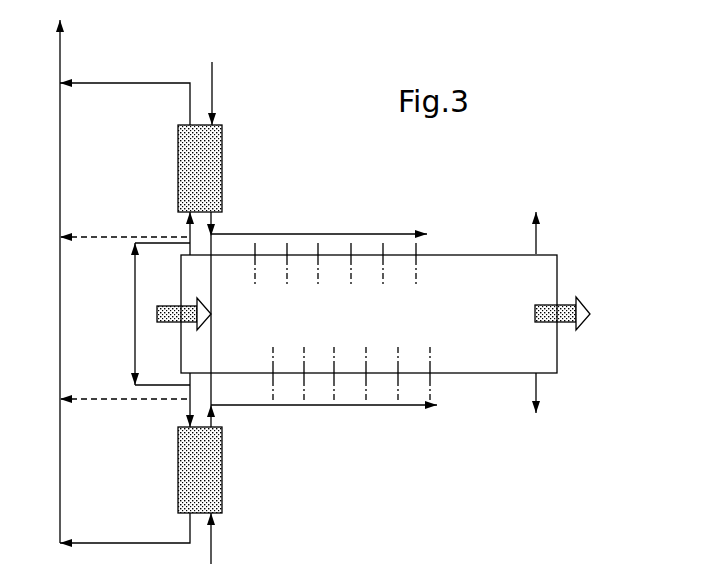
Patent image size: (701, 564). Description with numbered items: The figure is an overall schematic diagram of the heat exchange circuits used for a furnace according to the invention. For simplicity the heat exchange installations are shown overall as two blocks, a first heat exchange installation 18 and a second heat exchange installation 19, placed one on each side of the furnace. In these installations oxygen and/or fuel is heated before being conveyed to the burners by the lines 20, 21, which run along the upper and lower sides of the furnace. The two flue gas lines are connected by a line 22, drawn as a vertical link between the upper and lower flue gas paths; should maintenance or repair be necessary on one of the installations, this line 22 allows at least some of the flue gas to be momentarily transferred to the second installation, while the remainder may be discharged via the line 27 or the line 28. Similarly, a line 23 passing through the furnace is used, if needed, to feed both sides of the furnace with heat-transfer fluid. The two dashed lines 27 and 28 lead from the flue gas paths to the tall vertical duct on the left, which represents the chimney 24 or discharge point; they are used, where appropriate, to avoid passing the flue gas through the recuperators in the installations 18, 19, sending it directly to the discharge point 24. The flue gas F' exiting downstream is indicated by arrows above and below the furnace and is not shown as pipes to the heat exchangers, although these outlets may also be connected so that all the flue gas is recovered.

The heat exchange installation 18 is at (212, 192).
The heat exchange installation 19 is at (212, 458).
The line 20 is at (298, 228).
The line 21 is at (297, 406).
The line 22 is at (135, 292).
The line 23 is at (212, 373).
The chimney 24 is at (60, 62).
The line 27 is at (161, 399).
The line 28 is at (147, 237).